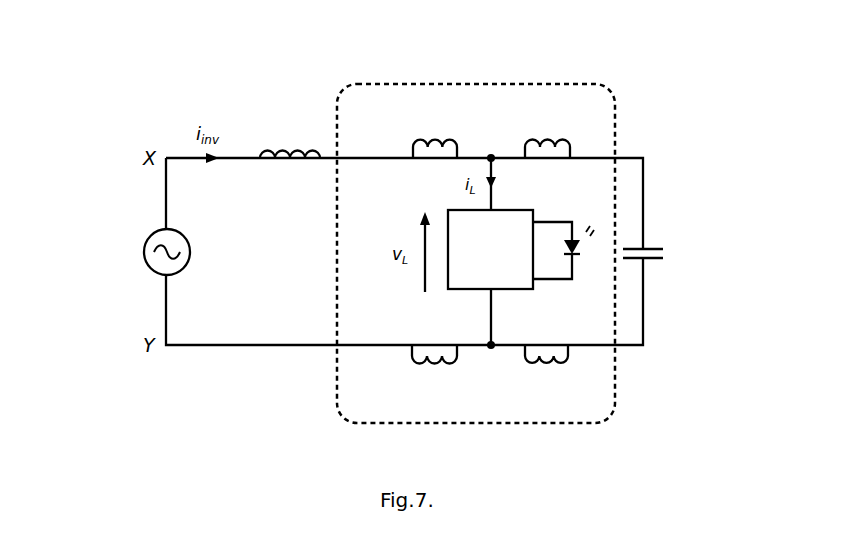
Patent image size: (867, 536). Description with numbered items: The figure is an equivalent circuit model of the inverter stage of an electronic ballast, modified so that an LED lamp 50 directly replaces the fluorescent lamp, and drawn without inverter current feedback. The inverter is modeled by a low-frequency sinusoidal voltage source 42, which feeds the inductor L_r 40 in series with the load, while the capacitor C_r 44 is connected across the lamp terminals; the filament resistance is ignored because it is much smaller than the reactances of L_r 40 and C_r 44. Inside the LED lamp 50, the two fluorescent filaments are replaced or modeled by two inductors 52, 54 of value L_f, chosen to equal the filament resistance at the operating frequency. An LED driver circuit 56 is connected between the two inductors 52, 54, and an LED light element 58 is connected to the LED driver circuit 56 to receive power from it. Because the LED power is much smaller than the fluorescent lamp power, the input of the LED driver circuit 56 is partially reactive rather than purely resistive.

The resonant inductor L_r 40 is at (305, 152).
The low-frequency sinusoidal voltage source v_inv' 42 is at (150, 272).
The resonant capacitor C_r 44 is at (658, 246).
The LED lamp 50 is at (593, 82).
The inductor L_f 52 is at (443, 143).
The inductor L_f 54 is at (432, 362).
The LED driver circuit 56 is at (523, 210).
The LED light element 58 is at (575, 243).